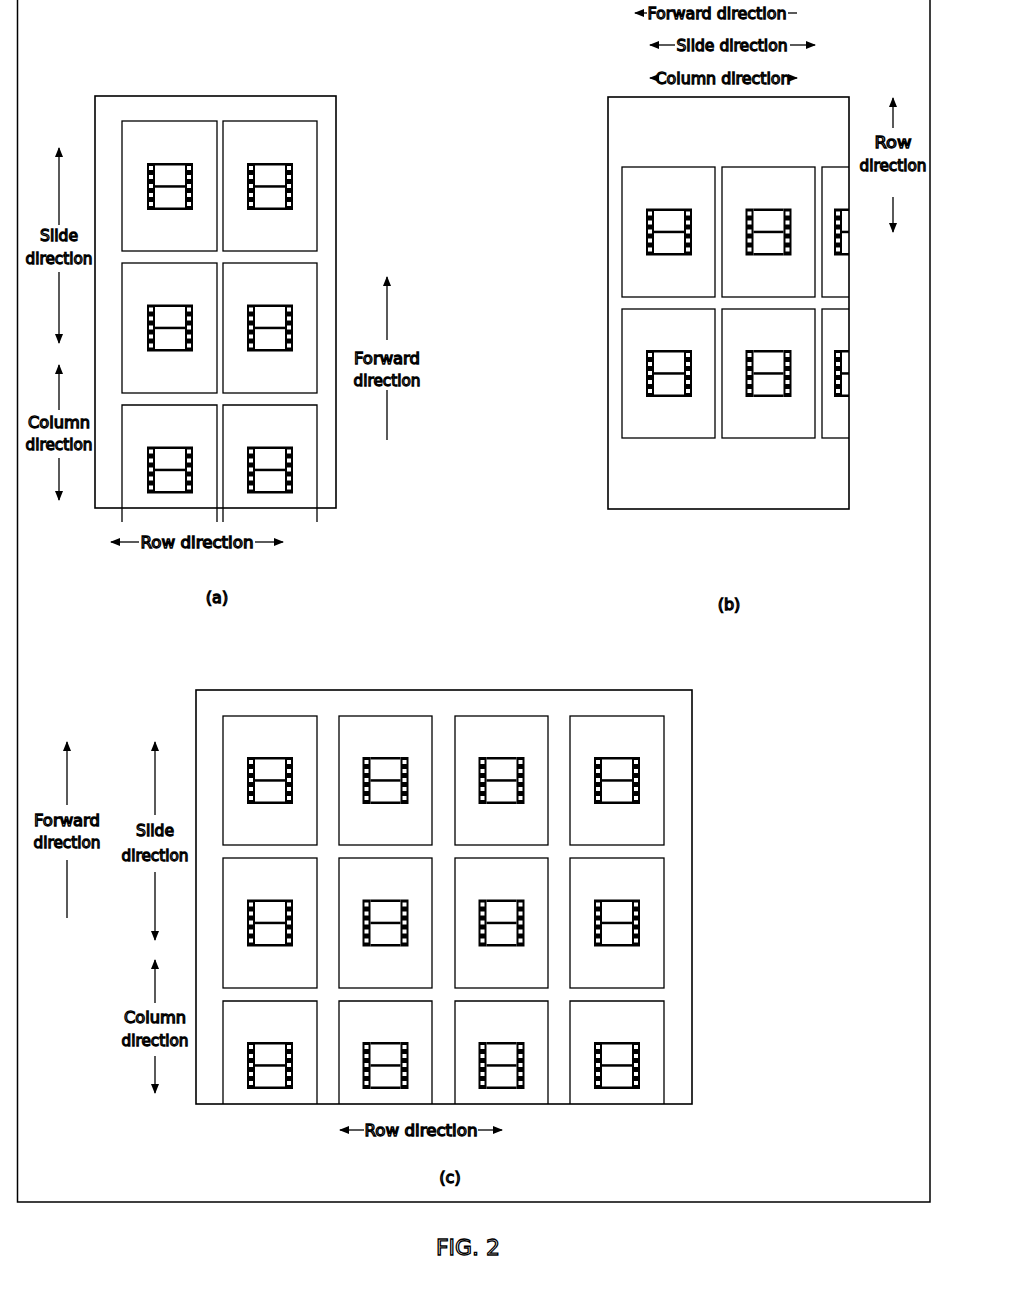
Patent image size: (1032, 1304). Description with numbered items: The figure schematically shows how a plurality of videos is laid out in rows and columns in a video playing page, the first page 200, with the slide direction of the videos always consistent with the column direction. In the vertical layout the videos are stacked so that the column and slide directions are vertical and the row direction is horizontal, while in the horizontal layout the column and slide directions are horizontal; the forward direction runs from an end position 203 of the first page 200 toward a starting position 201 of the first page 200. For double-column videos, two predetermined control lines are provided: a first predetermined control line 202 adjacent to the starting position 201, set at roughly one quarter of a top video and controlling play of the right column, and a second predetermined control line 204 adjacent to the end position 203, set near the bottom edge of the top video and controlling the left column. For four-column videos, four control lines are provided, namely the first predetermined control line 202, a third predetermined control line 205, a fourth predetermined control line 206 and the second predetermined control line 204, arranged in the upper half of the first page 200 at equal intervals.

The first page 200 is at (205, 96).
The starting position 201 is at (336, 96).
The first predetermined control line 202 is at (317, 161).
The end position 203 is at (377, 508).
The second predetermined control line 204 is at (317, 250).
The third predetermined control line 205 is at (665, 763).
The fourth predetermined control line 206 is at (665, 812).